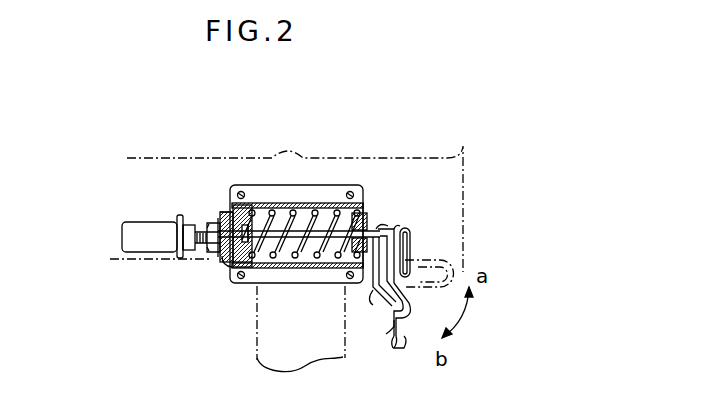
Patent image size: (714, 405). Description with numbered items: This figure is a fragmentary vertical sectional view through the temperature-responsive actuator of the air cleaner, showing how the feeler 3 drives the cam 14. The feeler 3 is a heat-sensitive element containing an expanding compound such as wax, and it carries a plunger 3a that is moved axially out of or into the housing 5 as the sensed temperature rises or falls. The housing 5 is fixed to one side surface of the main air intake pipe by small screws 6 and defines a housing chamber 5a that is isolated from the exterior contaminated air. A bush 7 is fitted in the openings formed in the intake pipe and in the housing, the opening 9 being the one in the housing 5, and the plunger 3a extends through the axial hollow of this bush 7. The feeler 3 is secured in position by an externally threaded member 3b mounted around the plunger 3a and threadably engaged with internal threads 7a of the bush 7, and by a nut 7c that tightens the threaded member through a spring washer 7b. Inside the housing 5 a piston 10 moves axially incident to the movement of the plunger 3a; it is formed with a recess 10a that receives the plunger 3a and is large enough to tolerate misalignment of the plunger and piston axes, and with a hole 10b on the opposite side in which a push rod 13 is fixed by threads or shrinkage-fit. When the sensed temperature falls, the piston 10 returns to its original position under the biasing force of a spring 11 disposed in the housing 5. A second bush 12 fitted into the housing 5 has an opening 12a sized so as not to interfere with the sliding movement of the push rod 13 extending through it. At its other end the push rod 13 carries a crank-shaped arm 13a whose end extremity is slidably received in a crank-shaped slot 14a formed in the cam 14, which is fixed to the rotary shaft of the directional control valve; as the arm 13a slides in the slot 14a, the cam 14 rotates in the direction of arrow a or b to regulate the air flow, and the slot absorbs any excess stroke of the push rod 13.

The feeler 3 is at (150, 222).
The plunger 3a is at (238, 268).
The externally threaded member 3b is at (210, 262).
The housing 5 is at (296, 284).
The housing chamber 5a is at (308, 204).
The small screws 6 is at (241, 191).
The bush 7 is at (218, 216).
The internal threads 7a is at (222, 276).
The spring washer 7b is at (214, 218).
The nut 7c is at (209, 232).
The opening 9 is at (224, 210).
The piston 10 is at (254, 205).
The recess 10a is at (237, 270).
The hole 10b is at (250, 278).
The spring 11 is at (337, 204).
The bush 12 is at (382, 228).
The opening 12a is at (410, 236).
The push rod 13 is at (277, 208).
The crank-shaped arm 13a is at (384, 296).
The cam 14 is at (405, 330).
The crank-shaped slot 14a is at (397, 333).